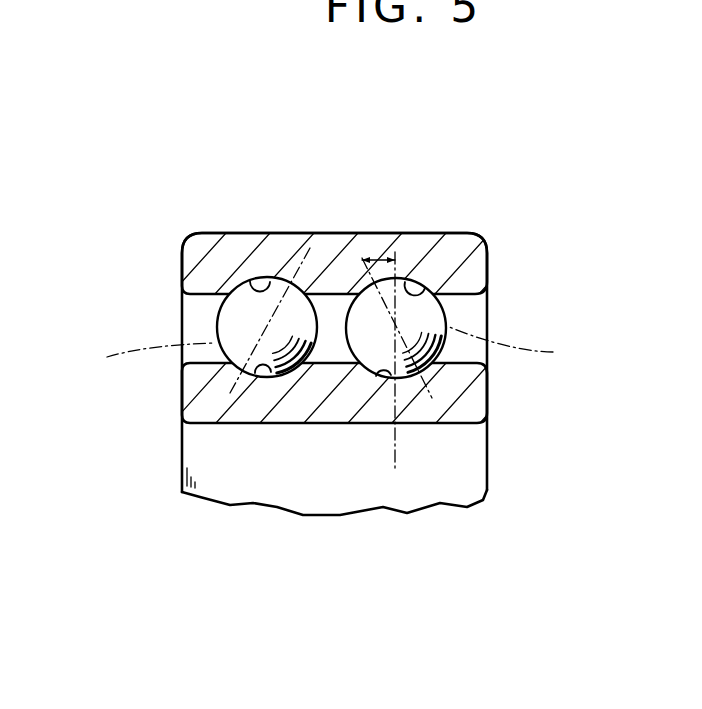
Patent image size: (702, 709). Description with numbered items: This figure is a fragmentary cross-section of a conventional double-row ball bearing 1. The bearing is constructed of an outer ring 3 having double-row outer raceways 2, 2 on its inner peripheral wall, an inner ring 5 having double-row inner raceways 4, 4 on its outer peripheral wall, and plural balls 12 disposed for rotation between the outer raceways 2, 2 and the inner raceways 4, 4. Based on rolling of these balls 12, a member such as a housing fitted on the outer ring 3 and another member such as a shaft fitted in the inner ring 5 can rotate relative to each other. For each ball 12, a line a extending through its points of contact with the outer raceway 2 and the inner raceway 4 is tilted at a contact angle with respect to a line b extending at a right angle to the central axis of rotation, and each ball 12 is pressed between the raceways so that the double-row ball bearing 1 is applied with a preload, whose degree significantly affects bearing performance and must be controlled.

The double-row ball bearing 1 is at (449, 230).
The outer raceways 2 is at (252, 277).
The outer ring 3 is at (298, 247).
The inner raceways 4 is at (270, 368).
The inner ring 5 is at (453, 415).
The balls 12 is at (232, 317).
The line through points of contact a is at (327, 350).
The line at right angle to central axis b is at (396, 452).